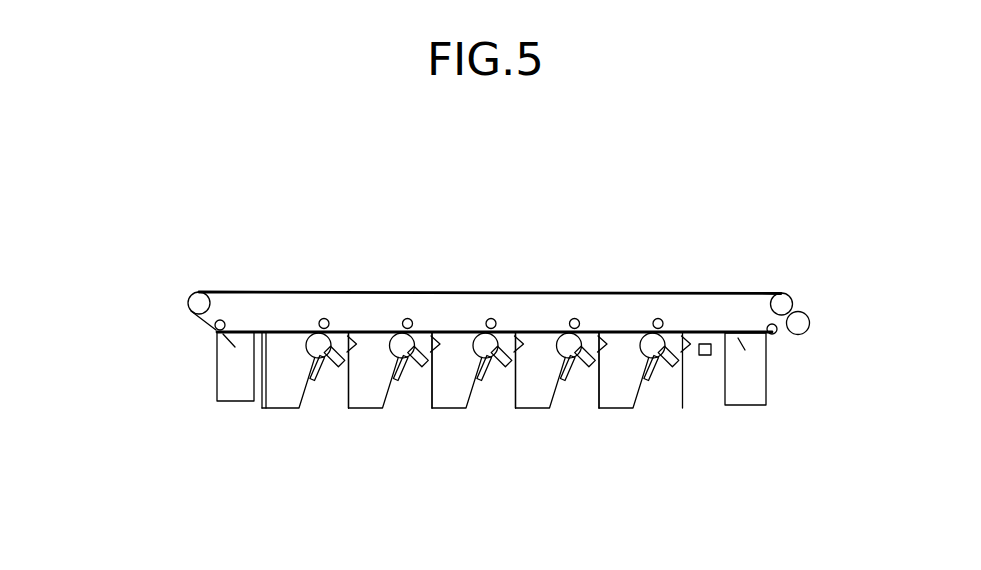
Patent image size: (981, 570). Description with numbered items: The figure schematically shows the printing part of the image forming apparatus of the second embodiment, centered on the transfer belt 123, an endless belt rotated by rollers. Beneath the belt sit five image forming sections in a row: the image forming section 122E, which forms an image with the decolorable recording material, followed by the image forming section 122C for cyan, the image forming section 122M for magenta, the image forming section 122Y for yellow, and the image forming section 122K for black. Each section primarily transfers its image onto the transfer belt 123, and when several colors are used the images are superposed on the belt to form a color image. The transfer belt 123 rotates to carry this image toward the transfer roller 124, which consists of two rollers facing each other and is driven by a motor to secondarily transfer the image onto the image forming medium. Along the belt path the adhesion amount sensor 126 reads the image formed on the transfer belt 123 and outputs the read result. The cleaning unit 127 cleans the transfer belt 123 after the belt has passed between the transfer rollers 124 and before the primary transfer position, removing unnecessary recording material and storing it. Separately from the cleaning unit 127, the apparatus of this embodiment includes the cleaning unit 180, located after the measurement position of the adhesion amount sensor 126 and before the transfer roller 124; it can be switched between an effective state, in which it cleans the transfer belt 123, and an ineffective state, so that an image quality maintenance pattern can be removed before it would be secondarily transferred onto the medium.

The cleaning unit 127 is at (237, 362).
The image forming section 122E is at (290, 380).
The image forming section 122C is at (377, 387).
The image forming section 122M is at (460, 390).
The image forming section 122Y is at (543, 390).
The image forming section 122K is at (630, 392).
The transfer belt 123 is at (762, 294).
The transfer roller 124 is at (793, 297).
The adhesion amount sensor 126 is at (710, 355).
The cleaning unit 180 is at (753, 373).